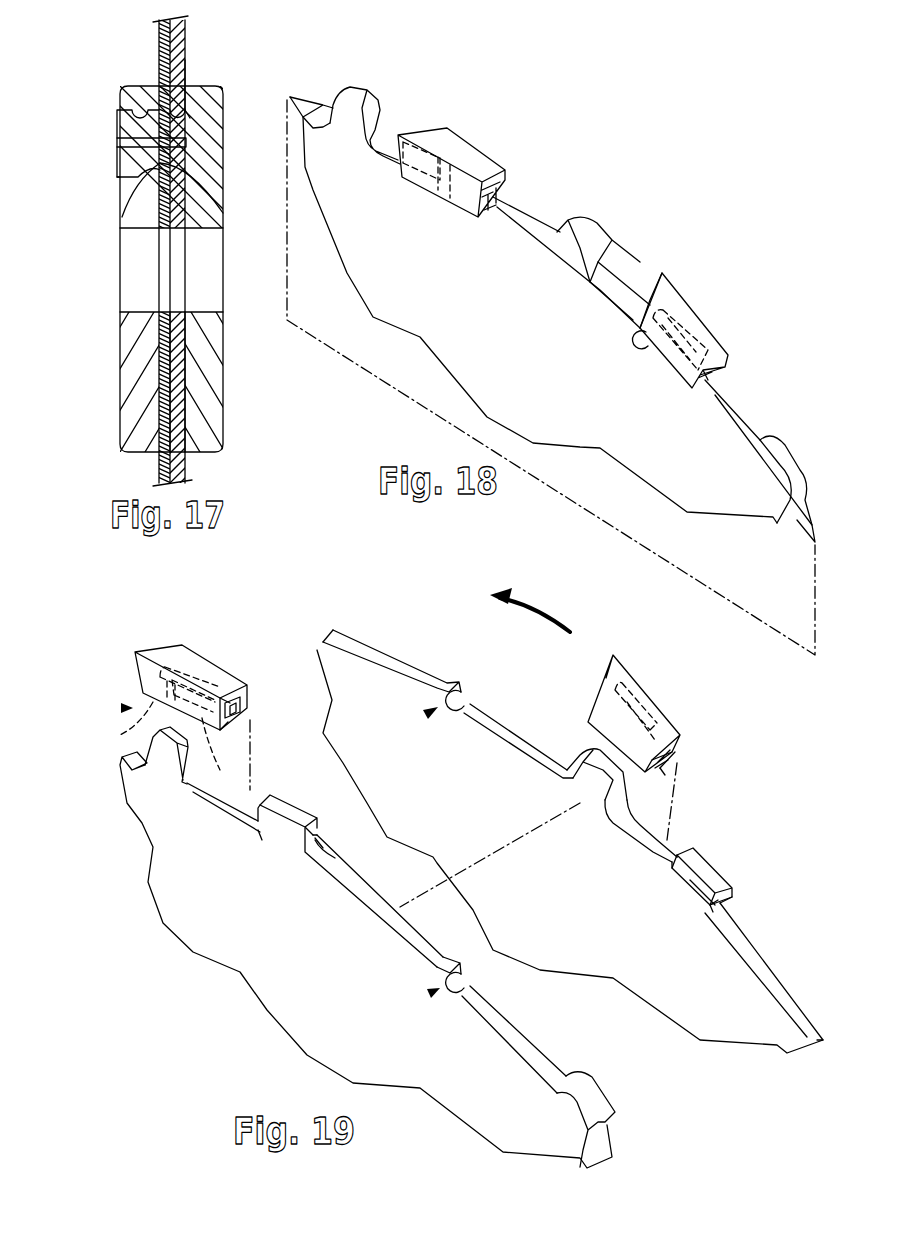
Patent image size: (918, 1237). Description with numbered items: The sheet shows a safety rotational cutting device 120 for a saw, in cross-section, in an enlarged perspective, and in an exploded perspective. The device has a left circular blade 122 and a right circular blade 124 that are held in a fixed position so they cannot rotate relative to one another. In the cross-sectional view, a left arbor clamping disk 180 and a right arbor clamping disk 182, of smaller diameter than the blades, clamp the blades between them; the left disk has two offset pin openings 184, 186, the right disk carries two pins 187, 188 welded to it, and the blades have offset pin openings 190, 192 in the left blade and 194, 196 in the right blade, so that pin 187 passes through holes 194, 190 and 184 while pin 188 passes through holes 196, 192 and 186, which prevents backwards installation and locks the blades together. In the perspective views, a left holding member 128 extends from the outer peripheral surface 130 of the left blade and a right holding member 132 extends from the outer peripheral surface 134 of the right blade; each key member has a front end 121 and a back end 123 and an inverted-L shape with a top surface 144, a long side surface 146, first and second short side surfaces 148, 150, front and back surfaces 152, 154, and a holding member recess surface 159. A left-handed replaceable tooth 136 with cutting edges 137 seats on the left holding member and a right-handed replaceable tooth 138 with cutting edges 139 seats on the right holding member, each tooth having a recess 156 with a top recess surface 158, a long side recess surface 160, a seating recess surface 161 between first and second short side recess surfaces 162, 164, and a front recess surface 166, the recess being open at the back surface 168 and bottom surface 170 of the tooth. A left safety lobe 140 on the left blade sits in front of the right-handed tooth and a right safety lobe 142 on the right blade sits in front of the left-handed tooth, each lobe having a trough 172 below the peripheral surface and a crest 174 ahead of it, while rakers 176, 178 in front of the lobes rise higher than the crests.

In FIG. 18, the safety rotational cutting device 120 is at (371, 353).
In FIG. 19, the front end 121 is at (264, 800).
In FIG. 17, the left circular blade 122 is at (160, 455).
In FIG. 18, the left circular blade 122 is at (723, 490).
In FIG. 19, the left circular blade 122 is at (467, 1100).
In FIG. 19, the back end 123 is at (320, 812).
In FIG. 17, the right circular blade 124 is at (185, 433).
In FIG. 18, the right circular blade 124 is at (765, 417).
In FIG. 19, the right circular blade 124 is at (767, 1013).
In FIG. 18, the left holding member 128 is at (457, 190).
In FIG. 19, the left holding member 128 is at (280, 840).
In FIG. 18, the outer peripheral surface of the left blade 130 is at (520, 228).
In FIG. 19, the outer peripheral surface of the left blade 130 is at (520, 1048).
In FIG. 18, the right holding member 132 is at (712, 352).
In FIG. 19, the right holding member 132 is at (725, 890).
In FIG. 18, the outer peripheral surface of the right blade 134 is at (615, 297).
In FIG. 19, the outer peripheral surface of the right blade 134 is at (500, 725).
In FIG. 18, the left-handed replaceable tooth 136 is at (470, 150).
In FIG. 19, the left-handed replaceable tooth 136 is at (190, 658).
In FIG. 18, the cutting edges of the left-handed tooth 137 is at (425, 133).
In FIG. 18, the right-handed replaceable tooth 138 is at (690, 313).
In FIG. 19, the right-handed replaceable tooth 138 is at (645, 705).
In FIG. 18, the cutting edges of the right-handed tooth 139 is at (652, 293).
In FIG. 19, the left safety lobe 140 is at (435, 991).
In FIG. 19, the right safety lobe 142 is at (430, 713).
In FIG. 19, the top surface 144 is at (283, 808).
In FIG. 19, the long side surface 146 is at (258, 830).
In FIG. 19, the first short side surface 148 is at (687, 873).
In FIG. 19, the second short side surface 150 is at (707, 913).
In FIG. 19, the front surface 152 is at (665, 860).
In FIG. 19, the back surface 154 is at (728, 905).
In FIG. 19, the recess 156 is at (122, 708).
In FIG. 19, the top recess surface 158 is at (680, 757).
In FIG. 19, the holding member recess surface 159 is at (325, 845).
In FIG. 19, the long side recess surface 160 is at (120, 735).
In FIG. 19, the seating recess surface 161 is at (220, 690).
In FIG. 19, the first short side recess surface 162 is at (246, 690).
In FIG. 19, the second short side recess surface 164 is at (250, 705).
In FIG. 19, the front recess surface 166 is at (166, 660).
In FIG. 19, the back surface of the tooth 168 is at (683, 783).
In FIG. 19, the bottom surface of the tooth 170 is at (220, 770).
In FIG. 19, the trough 172 is at (463, 988).
In FIG. 19, the crest 174 is at (445, 962).
In FIG. 18, the raker 176 is at (590, 232).
In FIG. 19, the raker 176 is at (570, 770).
In FIG. 18, the raker 178 is at (350, 105).
In FIG. 19, the raker 178 is at (160, 760).
In FIG. 17, the left arbor clamping disk 180 is at (135, 392).
In FIG. 17, the right arbor clamping disk 182 is at (205, 420).
In FIG. 17, the offset pin opening 184 is at (135, 112).
In FIG. 17, the offset pin opening 186 is at (135, 152).
In FIG. 17, the pin 187 is at (195, 110).
In FIG. 17, the pin 188 is at (205, 200).
In FIG. 17, the offset pin opening of the left blade 190 is at (158, 103).
In FIG. 17, the offset pin opening of the left blade 192 is at (122, 217).
In FIG. 17, the offset pin opening of the right blade 194 is at (183, 105).
In FIG. 17, the offset pin opening of the right blade 196 is at (180, 148).